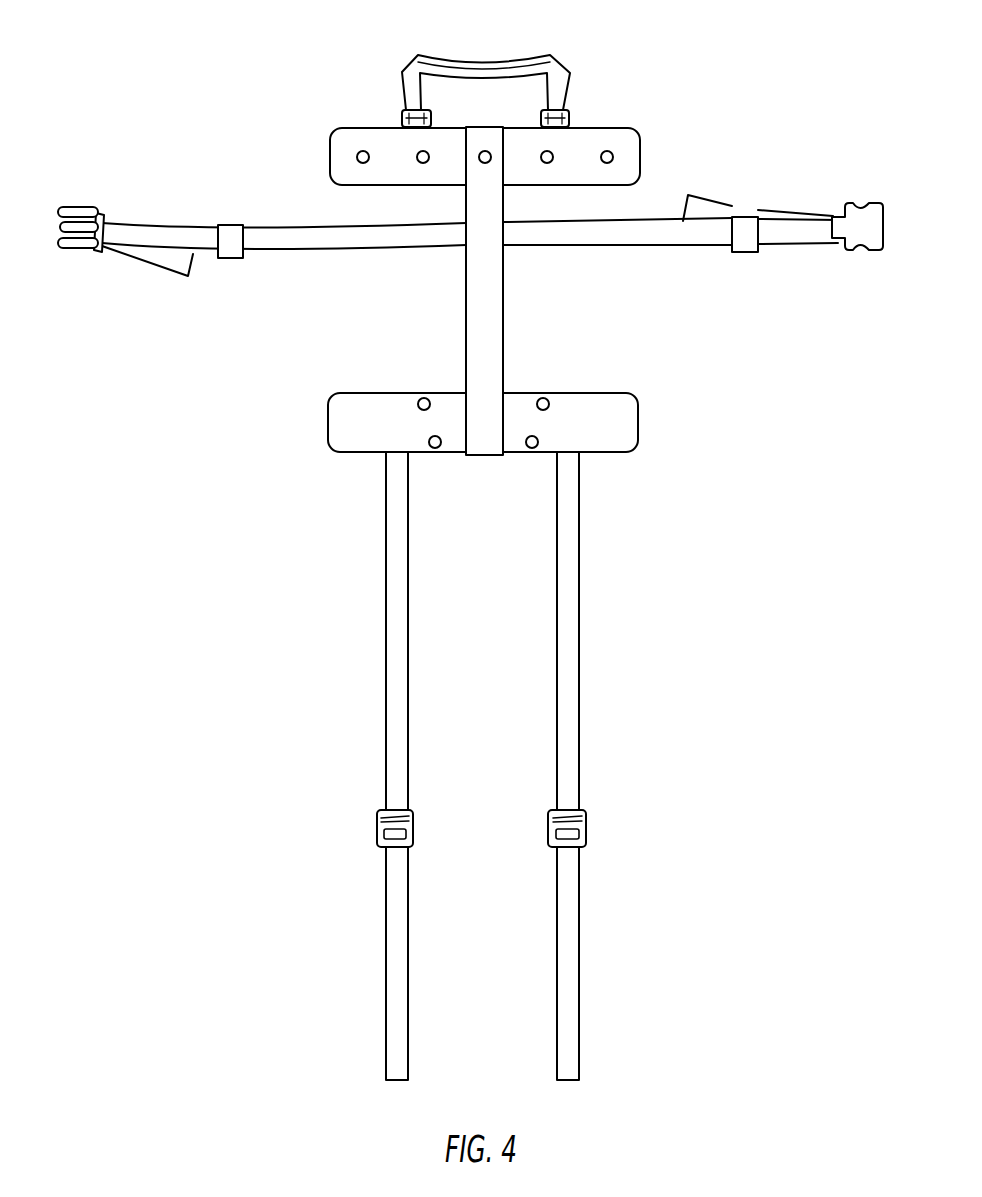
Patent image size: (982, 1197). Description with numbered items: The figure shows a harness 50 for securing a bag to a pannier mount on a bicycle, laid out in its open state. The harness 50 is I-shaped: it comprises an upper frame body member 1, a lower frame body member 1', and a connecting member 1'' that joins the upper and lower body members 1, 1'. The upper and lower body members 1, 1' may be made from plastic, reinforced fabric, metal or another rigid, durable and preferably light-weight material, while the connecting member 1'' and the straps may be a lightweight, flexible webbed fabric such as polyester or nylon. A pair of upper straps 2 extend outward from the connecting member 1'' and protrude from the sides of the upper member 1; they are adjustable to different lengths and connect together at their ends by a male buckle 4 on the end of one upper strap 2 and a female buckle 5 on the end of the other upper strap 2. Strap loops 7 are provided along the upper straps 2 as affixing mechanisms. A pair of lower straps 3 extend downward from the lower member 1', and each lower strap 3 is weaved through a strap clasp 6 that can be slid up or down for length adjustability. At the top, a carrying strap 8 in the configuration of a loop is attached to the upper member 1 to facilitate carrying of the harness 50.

The harness 50 is at (726, 100).
The upper frame body member 1 is at (441, 138).
The lower frame body member 1' is at (444, 417).
The connecting member 1'' is at (518, 291).
The upper straps 2 is at (354, 258).
The lower straps 3 is at (376, 626).
The male buckle 4 is at (76, 195).
The female buckle 5 is at (857, 195).
The strap clasp 6 is at (584, 824).
The strap loops 7 is at (231, 268).
The carrying strap 8 is at (565, 50).